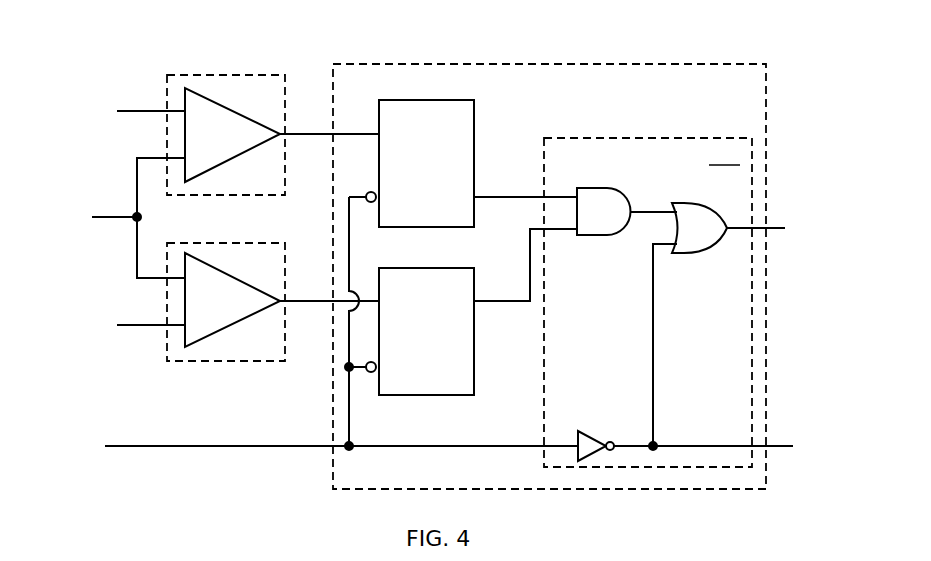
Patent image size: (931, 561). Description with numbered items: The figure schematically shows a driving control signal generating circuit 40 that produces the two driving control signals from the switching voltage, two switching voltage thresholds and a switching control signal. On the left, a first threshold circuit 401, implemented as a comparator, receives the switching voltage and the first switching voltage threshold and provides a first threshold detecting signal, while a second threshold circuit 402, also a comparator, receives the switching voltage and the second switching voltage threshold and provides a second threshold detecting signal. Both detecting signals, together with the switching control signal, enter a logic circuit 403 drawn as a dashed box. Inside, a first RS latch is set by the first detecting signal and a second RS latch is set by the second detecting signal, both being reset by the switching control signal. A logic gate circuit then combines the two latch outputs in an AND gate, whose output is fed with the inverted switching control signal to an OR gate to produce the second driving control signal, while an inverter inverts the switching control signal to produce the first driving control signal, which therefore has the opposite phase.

The driving control signal generating circuit 40 is at (465, 31).
The first threshold circuit 401 is at (286, 247).
The second threshold circuit 402 is at (167, 92).
The logic circuit 403 is at (745, 88).